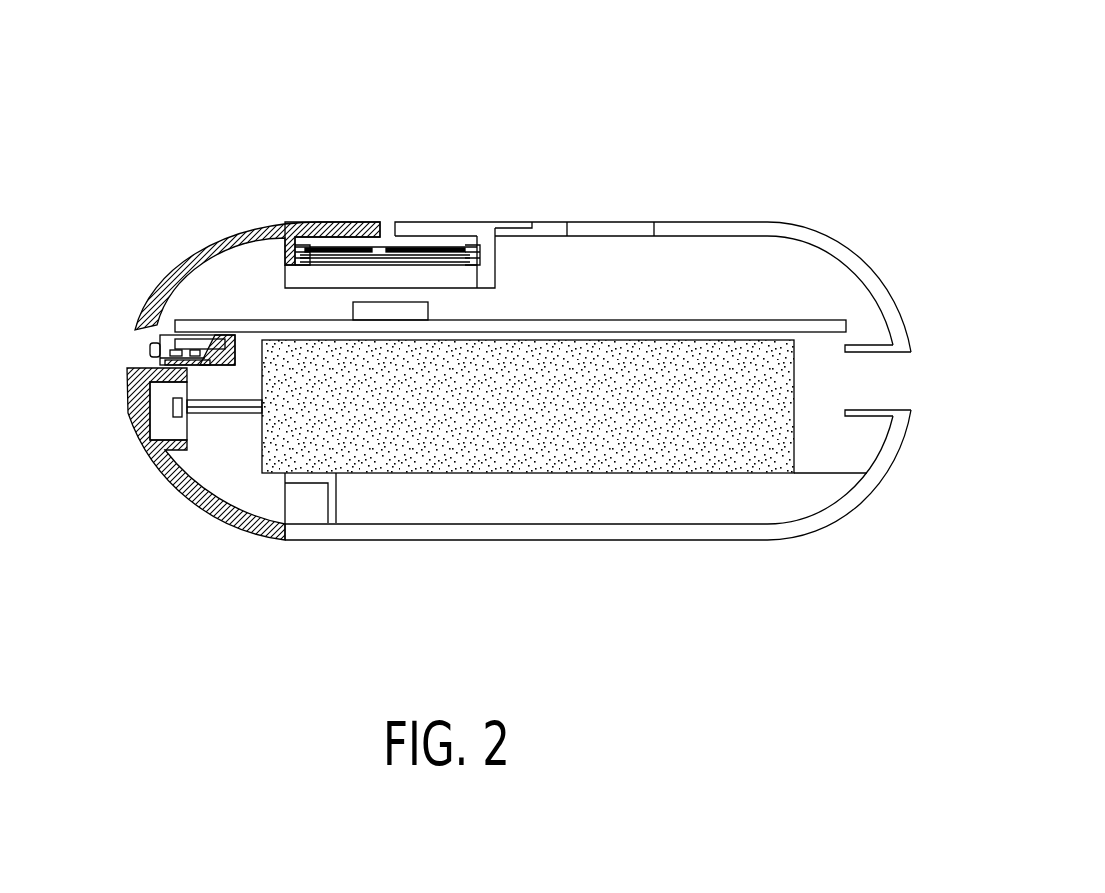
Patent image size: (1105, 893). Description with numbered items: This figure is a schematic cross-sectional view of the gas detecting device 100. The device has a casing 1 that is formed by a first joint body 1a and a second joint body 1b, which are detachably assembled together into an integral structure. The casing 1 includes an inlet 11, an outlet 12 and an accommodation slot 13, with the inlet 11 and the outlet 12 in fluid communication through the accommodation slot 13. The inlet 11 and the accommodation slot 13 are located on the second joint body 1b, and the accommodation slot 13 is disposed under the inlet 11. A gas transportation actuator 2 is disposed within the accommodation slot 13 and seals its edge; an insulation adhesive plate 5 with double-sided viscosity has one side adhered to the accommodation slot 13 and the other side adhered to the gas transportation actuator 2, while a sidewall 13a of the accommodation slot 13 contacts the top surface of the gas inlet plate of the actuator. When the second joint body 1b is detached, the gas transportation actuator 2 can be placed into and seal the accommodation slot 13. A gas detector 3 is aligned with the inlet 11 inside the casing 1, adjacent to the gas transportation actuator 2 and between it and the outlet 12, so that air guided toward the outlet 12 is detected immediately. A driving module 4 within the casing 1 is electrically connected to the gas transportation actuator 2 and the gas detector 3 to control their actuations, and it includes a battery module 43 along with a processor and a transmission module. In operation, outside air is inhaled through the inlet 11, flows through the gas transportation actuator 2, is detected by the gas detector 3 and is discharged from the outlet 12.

The gas detecting device 100 is at (1075, 65).
The casing 1 is at (845, 243).
The first joint body 1a is at (717, 227).
The second joint body 1b is at (186, 252).
The gas transportation actuator 2 is at (460, 242).
The gas detector 3 is at (451, 243).
The driving module 4 is at (836, 318).
The insulation adhesive plate 5 is at (297, 222).
The inlet 11 is at (395, 298).
The outlet 12 is at (909, 377).
The accommodation slot 13 is at (328, 240).
The sidewall 13a is at (310, 221).
The battery module 43 is at (756, 462).